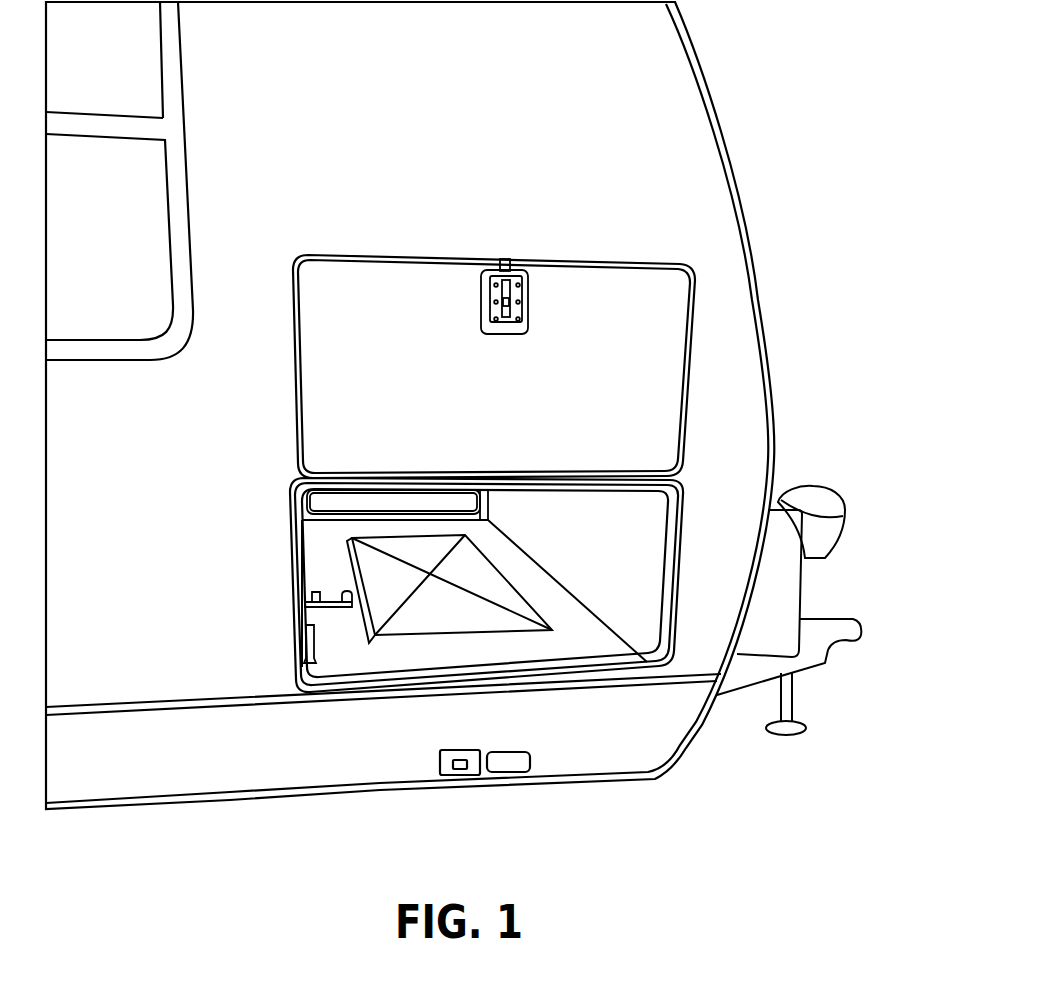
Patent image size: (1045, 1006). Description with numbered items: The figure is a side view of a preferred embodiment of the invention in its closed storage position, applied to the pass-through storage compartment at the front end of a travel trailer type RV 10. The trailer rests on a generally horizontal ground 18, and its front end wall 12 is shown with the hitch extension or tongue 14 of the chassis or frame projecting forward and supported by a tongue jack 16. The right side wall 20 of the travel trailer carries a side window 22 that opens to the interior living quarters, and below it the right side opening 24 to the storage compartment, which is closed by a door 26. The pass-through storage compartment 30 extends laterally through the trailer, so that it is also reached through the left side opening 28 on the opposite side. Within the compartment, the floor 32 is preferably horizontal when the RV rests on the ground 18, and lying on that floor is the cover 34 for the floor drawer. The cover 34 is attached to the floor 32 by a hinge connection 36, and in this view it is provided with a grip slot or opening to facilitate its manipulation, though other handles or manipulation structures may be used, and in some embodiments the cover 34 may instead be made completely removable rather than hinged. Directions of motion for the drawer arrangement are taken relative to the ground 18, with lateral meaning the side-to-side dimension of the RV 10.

The travel trailer type RV 10 is at (479, 411).
The front end wall of the travel trailer 12 is at (705, 68).
The hitch extension or tongue of the travel trailer chassis or frame 14 is at (853, 638).
The tongue jack 16 is at (785, 707).
The ground 18 is at (731, 818).
The right side wall of the travel trailer 20 is at (462, 188).
The side window 22 is at (170, 88).
The right side opening to the storage compartment 24 is at (685, 527).
The door for the right side opening 26 is at (685, 265).
The left side opening for the storage compartment 28 is at (483, 512).
The pass-through storage compartment 30 is at (631, 576).
The floor of the storage compartment 32 is at (322, 542).
The cover for the floor drawer 34 is at (372, 562).
The hinge connection for the cover 36 is at (362, 617).